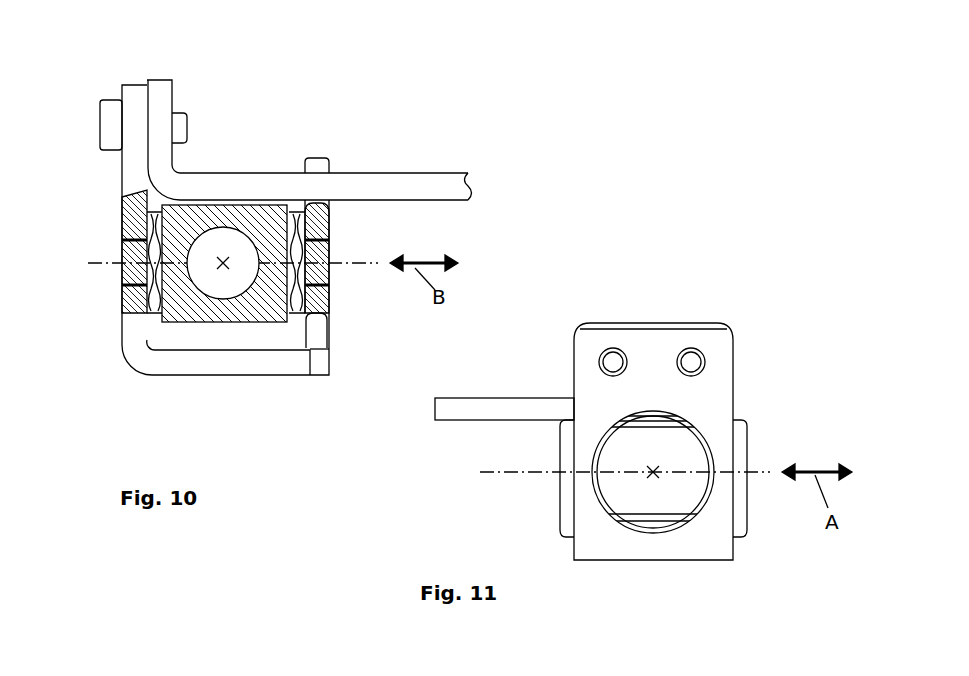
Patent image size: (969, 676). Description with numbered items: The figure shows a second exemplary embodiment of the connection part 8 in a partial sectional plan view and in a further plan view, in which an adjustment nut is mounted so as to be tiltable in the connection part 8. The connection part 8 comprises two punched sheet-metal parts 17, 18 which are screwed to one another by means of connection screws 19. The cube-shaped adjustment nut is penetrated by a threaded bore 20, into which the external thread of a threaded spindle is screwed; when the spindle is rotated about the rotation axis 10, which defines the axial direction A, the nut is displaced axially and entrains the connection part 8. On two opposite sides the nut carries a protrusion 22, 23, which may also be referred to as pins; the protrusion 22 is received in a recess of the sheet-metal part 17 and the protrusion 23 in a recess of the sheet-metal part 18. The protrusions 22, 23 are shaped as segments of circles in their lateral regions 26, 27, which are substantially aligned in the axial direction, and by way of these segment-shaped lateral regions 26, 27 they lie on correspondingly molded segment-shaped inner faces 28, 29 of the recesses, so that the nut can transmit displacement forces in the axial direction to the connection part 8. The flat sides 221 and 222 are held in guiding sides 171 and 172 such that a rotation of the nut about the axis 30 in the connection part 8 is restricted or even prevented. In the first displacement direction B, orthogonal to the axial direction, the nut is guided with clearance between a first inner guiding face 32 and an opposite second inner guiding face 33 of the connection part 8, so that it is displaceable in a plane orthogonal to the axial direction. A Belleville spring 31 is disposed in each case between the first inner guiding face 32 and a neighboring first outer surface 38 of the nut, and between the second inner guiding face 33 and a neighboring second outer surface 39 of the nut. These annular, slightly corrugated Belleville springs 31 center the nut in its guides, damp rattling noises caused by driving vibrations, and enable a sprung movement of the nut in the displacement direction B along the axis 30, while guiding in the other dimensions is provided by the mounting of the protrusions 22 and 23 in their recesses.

In FIG. 10, the connection part 8 is at (288, 126).
In FIG. 11, the connection part 8 is at (581, 282).
In FIG. 10, the rotation axis 10 is at (122, 238).
In FIG. 11, the rotation axis 10 is at (748, 472).
In FIG. 10, the sheet-metal part 17 is at (140, 357).
In FIG. 11, the sheet-metal part 17 is at (718, 347).
In FIG. 10, the sheet-metal part 18 is at (403, 185).
In FIG. 11, the sheet-metal part 18 is at (507, 403).
In FIG. 10, the connection screws 19 is at (113, 120).
In FIG. 11, the connection screws 19 is at (692, 362).
In FIG. 10, the threaded bore 20 is at (223, 258).
In FIG. 10, the protrusion 22 is at (122, 287).
In FIG. 11, the protrusion 22 is at (692, 467).
In FIG. 10, the protrusion 23 is at (325, 288).
In FIG. 11, the lateral region 26 is at (603, 502).
In FIG. 11, the lateral region 27 is at (703, 502).
In FIG. 11, the inner face 28 is at (597, 467).
In FIG. 11, the inner face 29 is at (692, 483).
In FIG. 10, the axis 30 is at (105, 263).
In FIG. 11, the axis 30 is at (645, 465).
In FIG. 10, the Belleville spring 31 is at (125, 207).
In FIG. 10, the first inner guiding face 32 is at (148, 312).
In FIG. 10, the second inner guiding face 33 is at (303, 312).
In FIG. 10, the first outer surface 38 is at (167, 320).
In FIG. 10, the second outer surface 39 is at (285, 312).
In FIG. 11, the guiding side 171 is at (670, 412).
In FIG. 11, the guiding side 172 is at (658, 520).
In FIG. 11, the flat side 221 is at (685, 418).
In FIG. 11, the flat side 222 is at (630, 520).